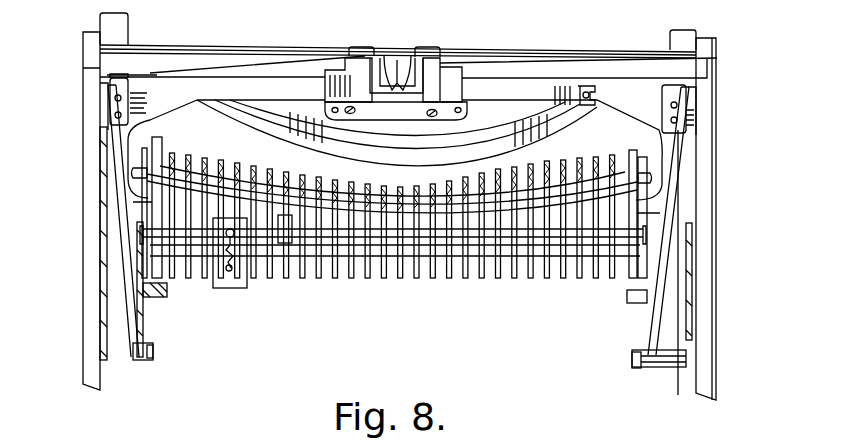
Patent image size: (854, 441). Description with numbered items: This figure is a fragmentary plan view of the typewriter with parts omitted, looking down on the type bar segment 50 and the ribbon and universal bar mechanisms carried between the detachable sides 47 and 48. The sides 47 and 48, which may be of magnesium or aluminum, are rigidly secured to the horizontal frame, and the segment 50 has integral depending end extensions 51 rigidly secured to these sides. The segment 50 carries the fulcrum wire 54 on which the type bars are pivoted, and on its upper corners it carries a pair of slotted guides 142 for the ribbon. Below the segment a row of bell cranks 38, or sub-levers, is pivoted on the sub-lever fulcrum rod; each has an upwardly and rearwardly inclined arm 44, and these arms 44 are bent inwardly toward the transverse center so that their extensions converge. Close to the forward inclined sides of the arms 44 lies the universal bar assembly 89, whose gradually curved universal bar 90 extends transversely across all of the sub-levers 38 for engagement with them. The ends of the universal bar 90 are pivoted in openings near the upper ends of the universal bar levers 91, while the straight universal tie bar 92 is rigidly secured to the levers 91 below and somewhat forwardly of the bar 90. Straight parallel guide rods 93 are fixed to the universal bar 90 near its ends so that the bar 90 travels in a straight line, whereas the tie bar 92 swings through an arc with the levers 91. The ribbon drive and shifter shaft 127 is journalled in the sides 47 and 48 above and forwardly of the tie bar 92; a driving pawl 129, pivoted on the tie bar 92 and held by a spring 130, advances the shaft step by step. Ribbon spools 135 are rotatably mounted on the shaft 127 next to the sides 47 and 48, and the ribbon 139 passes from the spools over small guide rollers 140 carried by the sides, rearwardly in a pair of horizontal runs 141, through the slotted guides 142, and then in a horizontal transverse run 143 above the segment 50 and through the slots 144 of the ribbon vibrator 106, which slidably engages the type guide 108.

The bell cranks 38 is at (487, 280).
The upwardly and rearwardly inclined arms 44 is at (208, 158).
The detachable side 47 is at (83, 150).
The detachable side 48 is at (707, 197).
The type bar segment 50 is at (551, 143).
The depending end extensions 51 is at (107, 135).
The fulcrum wire 54 is at (587, 88).
The universal bar assembly 89 is at (428, 200).
The universal bar 90 is at (357, 208).
The universal bar levers 91 is at (133, 202).
The universal tie bar 92 is at (375, 283).
The guide rods 93 is at (160, 147).
The ribbon vibrator 106 is at (378, 48).
The type guide 108 is at (396, 113).
The ribbon drive and shifter shaft 127 is at (160, 302).
The driving pawl 129 is at (228, 292).
The spring 130 is at (235, 258).
The ribbon spools 135 is at (100, 265).
The ribbon 139 is at (502, 70).
The guide rollers 140 is at (137, 360).
The horizontal runs 141 is at (110, 182).
The slotted guides 142 is at (110, 82).
The transverse run 143 is at (292, 67).
The slots 144 is at (363, 47).